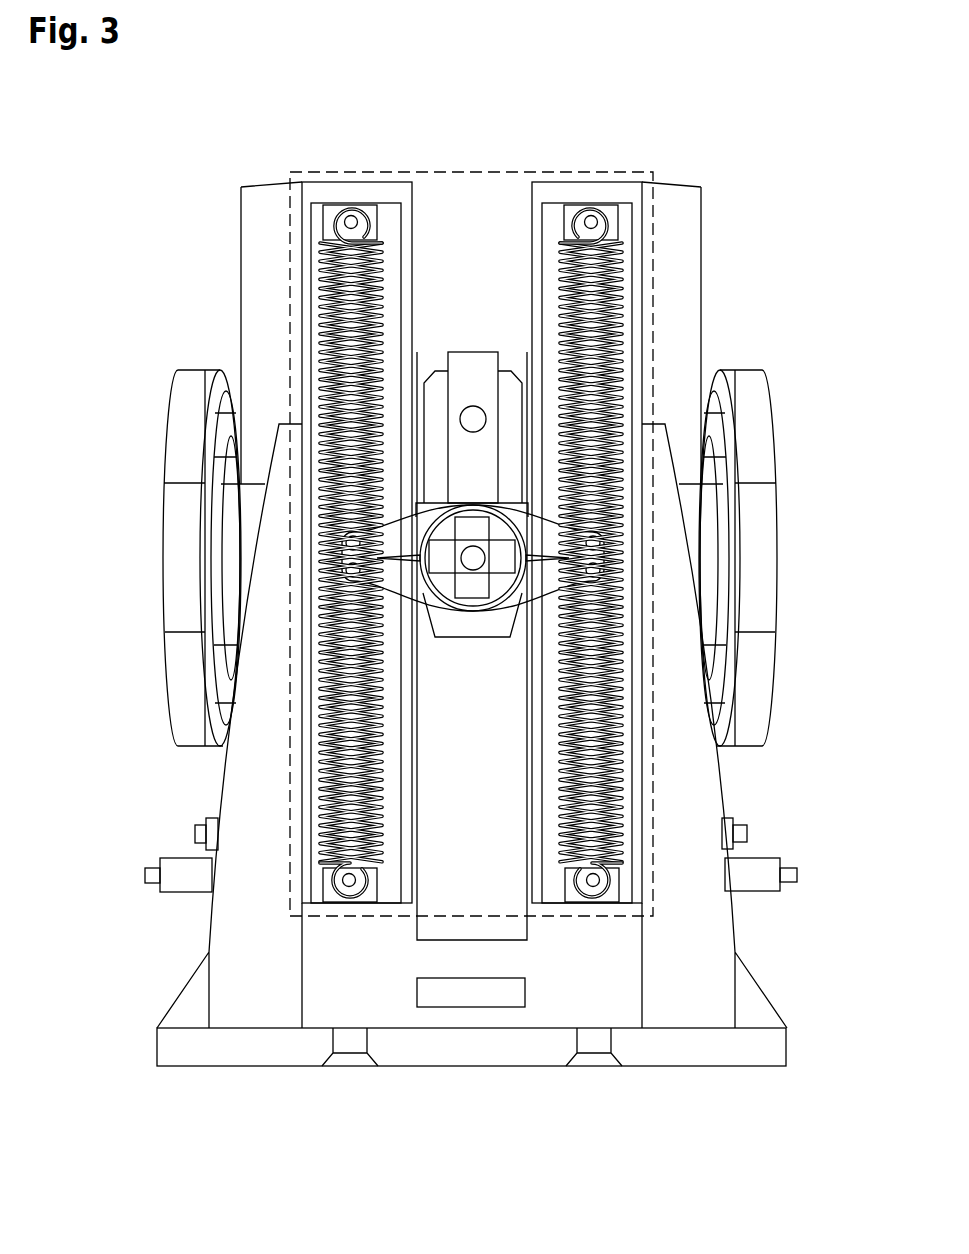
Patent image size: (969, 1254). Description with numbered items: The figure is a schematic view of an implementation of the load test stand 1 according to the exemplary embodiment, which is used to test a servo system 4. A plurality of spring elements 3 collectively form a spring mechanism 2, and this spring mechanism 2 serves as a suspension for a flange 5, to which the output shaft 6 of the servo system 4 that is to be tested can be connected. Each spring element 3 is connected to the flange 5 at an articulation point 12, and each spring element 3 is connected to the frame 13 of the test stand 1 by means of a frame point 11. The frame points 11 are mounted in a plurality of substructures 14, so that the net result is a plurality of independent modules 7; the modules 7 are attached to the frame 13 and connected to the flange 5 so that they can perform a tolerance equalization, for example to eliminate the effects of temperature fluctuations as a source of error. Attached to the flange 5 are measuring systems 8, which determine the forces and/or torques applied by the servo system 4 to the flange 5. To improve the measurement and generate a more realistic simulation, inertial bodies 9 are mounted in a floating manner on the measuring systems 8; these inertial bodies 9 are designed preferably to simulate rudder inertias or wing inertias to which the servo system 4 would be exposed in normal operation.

The test stand 1 is at (773, 170).
The spring mechanism 2 is at (431, 283).
The spring element 3 is at (322, 322).
The servo system 4 is at (463, 690).
The flange 5 is at (392, 575).
The output shaft 6 is at (473, 558).
The independent module 7 is at (284, 269).
The measuring system 8 is at (224, 468).
The inertial body 9 is at (185, 412).
The frame point 11 is at (350, 218).
The articulation point 12 is at (352, 570).
The frame 13 is at (175, 1045).
The substructure 14 is at (289, 858).